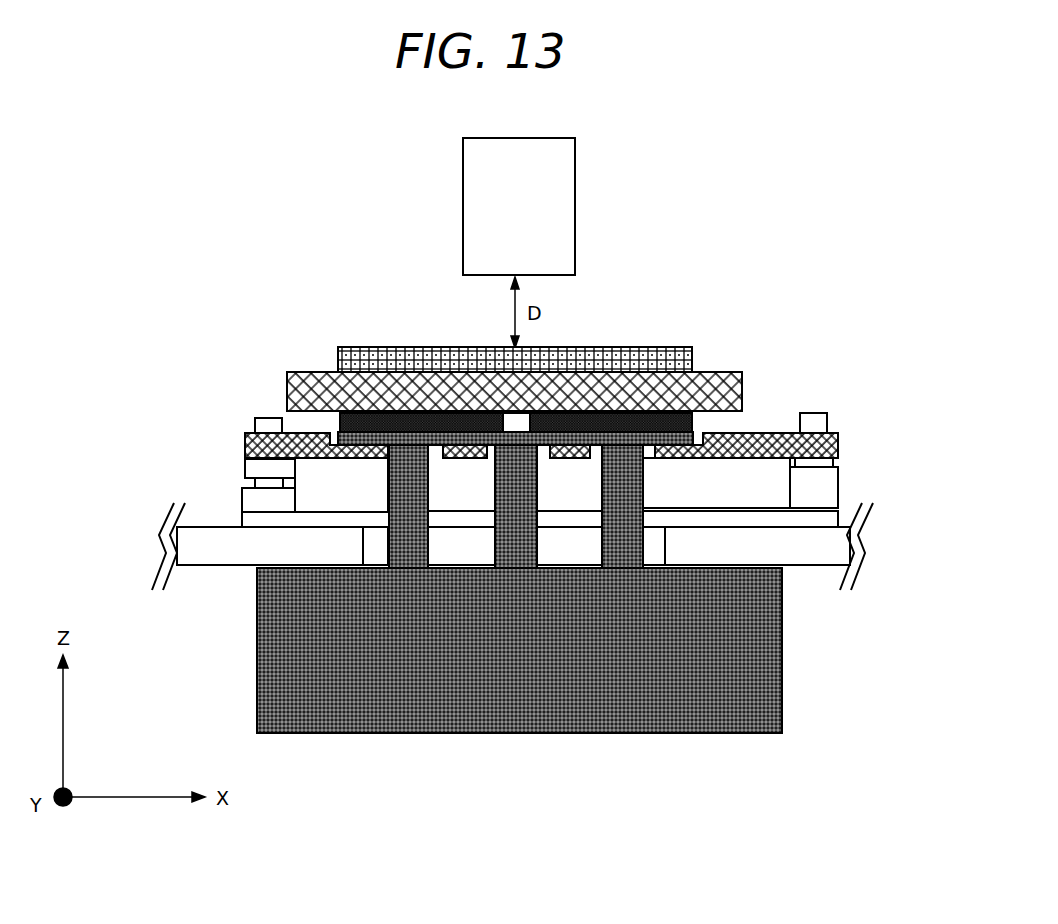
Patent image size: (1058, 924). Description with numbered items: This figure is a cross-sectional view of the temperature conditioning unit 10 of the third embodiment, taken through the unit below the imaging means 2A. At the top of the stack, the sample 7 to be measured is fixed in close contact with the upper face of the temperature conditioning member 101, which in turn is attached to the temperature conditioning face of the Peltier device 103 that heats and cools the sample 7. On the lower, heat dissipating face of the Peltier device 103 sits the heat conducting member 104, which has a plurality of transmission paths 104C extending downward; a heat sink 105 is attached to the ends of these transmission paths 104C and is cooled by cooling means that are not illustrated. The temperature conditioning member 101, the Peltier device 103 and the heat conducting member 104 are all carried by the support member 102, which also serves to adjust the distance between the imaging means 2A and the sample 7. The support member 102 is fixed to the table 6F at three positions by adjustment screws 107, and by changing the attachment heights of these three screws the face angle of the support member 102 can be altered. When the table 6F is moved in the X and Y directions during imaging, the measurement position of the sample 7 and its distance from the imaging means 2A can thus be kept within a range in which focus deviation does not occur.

The imaging means 2A is at (562, 200).
The temperature conditioning unit 10 is at (355, 312).
The sample 7 is at (402, 360).
The Peltier device 103 is at (415, 420).
The temperature conditioning member 101 is at (309, 378).
The adjustment screw 107 is at (265, 417).
The heat conducting member 104 is at (663, 437).
The support member 102 is at (244, 443).
The table 6F is at (218, 557).
The transmission paths 104C is at (410, 540).
The heat sink 105 is at (582, 723).